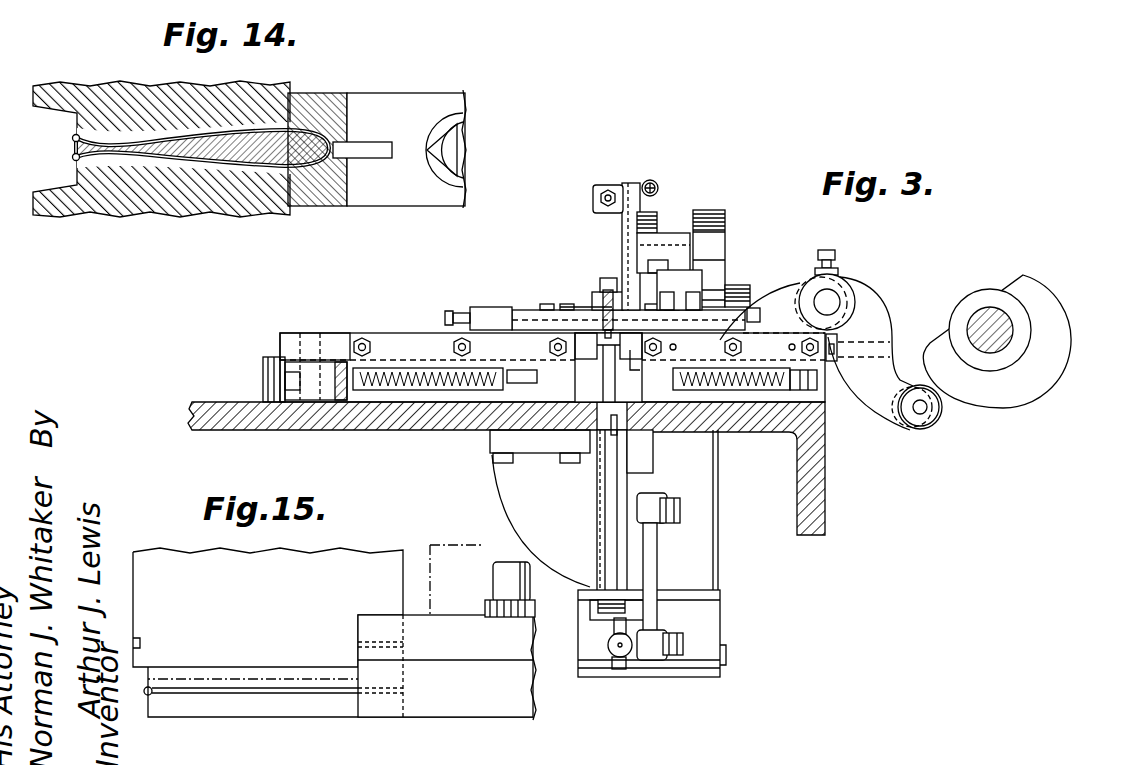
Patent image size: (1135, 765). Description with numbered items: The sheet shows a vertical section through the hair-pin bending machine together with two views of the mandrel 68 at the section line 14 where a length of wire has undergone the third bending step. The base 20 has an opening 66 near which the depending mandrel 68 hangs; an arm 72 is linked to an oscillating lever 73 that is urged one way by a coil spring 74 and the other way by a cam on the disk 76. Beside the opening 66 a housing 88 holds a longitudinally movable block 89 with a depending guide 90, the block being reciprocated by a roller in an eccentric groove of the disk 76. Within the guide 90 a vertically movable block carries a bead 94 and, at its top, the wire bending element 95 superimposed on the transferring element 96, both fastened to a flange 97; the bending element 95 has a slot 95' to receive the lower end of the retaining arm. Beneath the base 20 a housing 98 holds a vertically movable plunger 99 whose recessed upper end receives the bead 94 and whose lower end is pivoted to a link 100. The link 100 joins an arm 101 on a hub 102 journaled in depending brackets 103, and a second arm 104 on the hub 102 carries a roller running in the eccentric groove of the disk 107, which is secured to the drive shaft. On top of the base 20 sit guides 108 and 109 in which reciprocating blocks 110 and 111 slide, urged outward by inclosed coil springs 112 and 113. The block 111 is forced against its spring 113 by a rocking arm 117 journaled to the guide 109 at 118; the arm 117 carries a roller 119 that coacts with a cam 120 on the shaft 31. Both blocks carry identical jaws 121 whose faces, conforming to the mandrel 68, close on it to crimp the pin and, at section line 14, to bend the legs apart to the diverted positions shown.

In FIG. 15, the section line 14— 14 is at (478, 548).
In FIG. 3, the base 20 is at (238, 420).
In FIG. 3, the shaft 31 is at (990, 318).
In FIG. 3, the opening 66 is at (580, 436).
In FIG. 14, the mandrel 68 is at (214, 165).
In FIG. 3, the mandrel 68 is at (590, 306).
In FIG. 3, the arm 72 is at (600, 185).
In FIG. 3, the oscillating lever 73 is at (630, 222).
In FIG. 3, the coil spring 74 is at (656, 182).
In FIG. 3, the disk 76 is at (660, 215).
In FIG. 3, the housing 88 is at (668, 288).
In FIG. 3, the longitudinally movable block 89 is at (700, 290).
In FIG. 3, the depending guide 90 is at (650, 463).
In FIG. 3, the bead 94 is at (607, 490).
In FIG. 14, the wire bending element 95 is at (377, 131).
In FIG. 3, the wire bending element 95 is at (603, 291).
In FIG. 15, the wire bending element 95 is at (491, 593).
In FIG. 14, the slot 95' is at (362, 106).
In FIG. 15, the transferring element 96 is at (457, 703).
In FIG. 3, the flange 97 is at (603, 350).
In FIG. 3, the housing 98 is at (613, 545).
In FIG. 3, the vertically movable plunger 99 is at (610, 420).
In FIG. 3, the link 100 is at (652, 555).
In FIG. 3, the arm 101 is at (612, 657).
In FIG. 3, the hub 102 is at (672, 665).
In FIG. 3, the depending brackets 103 is at (720, 622).
In FIG. 3, the second arm 104 is at (680, 603).
In FIG. 3, the disk 107 is at (725, 214).
In FIG. 3, the guide 108 is at (405, 342).
In FIG. 3, the guide 109 is at (766, 290).
In FIG. 3, the reciprocating block 110 is at (330, 340).
In FIG. 3, the reciprocating block 111 is at (633, 355).
In FIG. 3, the coil spring 112 is at (437, 392).
In FIG. 3, the coil spring 113 is at (745, 392).
In FIG. 3, the rocking arm 117 is at (880, 400).
In FIG. 3, the journal 118 is at (828, 302).
In FIG. 3, the roller 119 is at (940, 422).
In FIG. 3, the cam 120 is at (1065, 328).
In FIG. 14, the jaws 121 is at (88, 95).
In FIG. 3, the jaws 121 is at (575, 307).